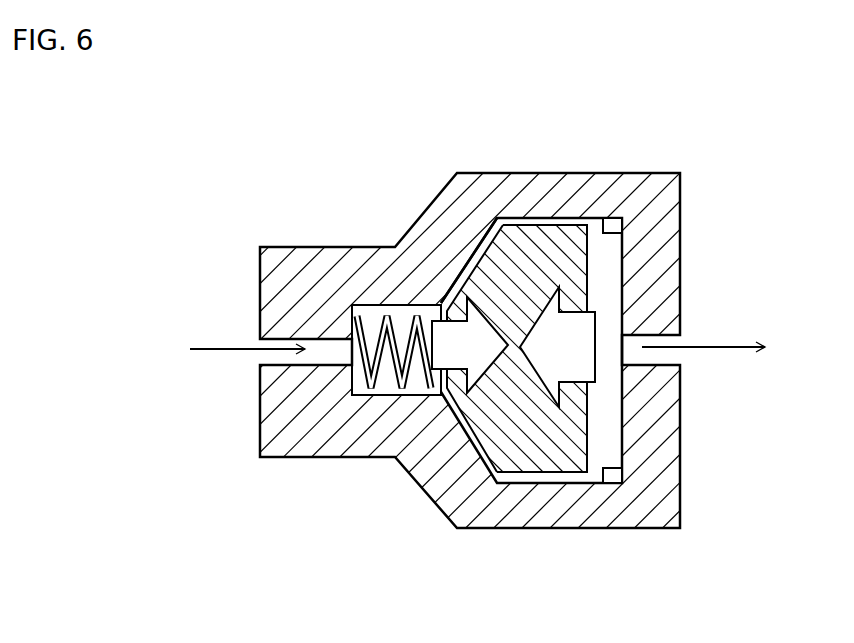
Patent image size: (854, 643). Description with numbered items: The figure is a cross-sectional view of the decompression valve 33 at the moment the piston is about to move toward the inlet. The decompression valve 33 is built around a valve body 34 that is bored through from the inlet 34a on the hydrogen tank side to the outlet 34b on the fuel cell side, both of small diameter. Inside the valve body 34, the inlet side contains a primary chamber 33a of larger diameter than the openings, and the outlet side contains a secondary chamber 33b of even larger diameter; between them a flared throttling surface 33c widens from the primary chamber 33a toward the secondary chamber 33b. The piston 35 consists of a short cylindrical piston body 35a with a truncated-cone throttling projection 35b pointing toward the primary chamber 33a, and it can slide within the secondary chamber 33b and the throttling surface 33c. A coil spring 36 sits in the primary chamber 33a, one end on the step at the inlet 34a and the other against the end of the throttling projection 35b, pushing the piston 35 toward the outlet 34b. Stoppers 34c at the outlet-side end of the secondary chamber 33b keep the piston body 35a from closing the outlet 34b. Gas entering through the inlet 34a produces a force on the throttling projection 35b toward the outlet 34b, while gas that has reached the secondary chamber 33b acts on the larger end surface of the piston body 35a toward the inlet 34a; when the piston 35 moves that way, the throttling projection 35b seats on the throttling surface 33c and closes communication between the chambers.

The decompression valve 33 is at (732, 150).
The primary chamber 33a is at (398, 315).
The secondary chamber 33b is at (612, 297).
The throttling surface 33c is at (490, 237).
The valve body 34 is at (555, 172).
The inlet 34a is at (259, 359).
The outlet 34b is at (682, 363).
The stoppers 34c is at (615, 484).
The piston 35 is at (519, 417).
The piston body 35a is at (543, 472).
The throttling projection 35b is at (502, 430).
The spring 36 is at (397, 380).